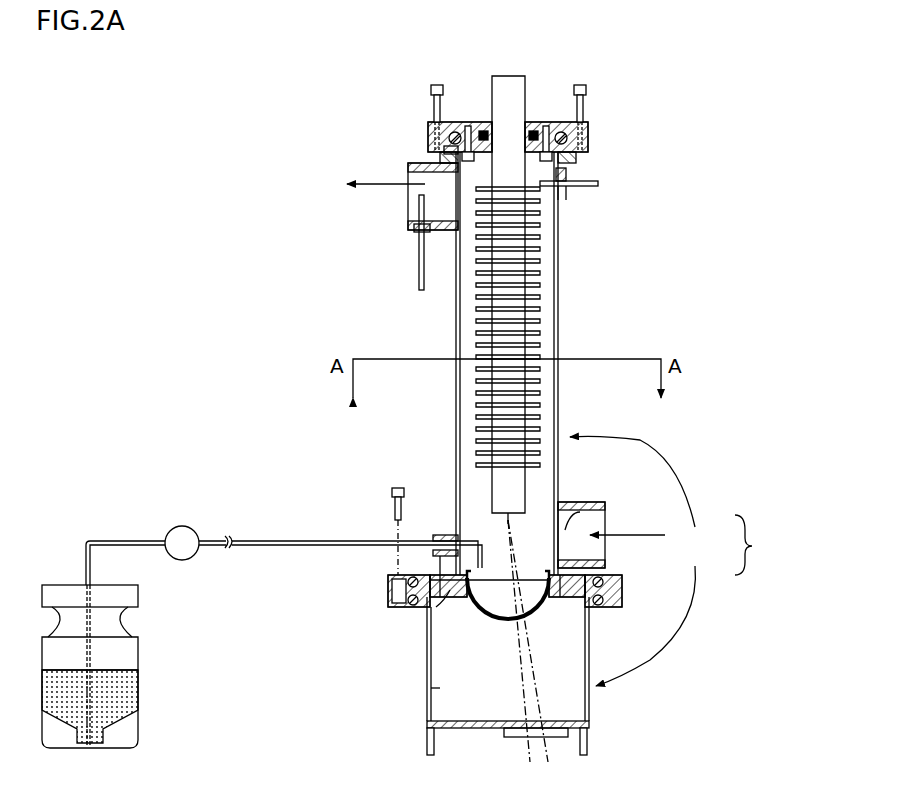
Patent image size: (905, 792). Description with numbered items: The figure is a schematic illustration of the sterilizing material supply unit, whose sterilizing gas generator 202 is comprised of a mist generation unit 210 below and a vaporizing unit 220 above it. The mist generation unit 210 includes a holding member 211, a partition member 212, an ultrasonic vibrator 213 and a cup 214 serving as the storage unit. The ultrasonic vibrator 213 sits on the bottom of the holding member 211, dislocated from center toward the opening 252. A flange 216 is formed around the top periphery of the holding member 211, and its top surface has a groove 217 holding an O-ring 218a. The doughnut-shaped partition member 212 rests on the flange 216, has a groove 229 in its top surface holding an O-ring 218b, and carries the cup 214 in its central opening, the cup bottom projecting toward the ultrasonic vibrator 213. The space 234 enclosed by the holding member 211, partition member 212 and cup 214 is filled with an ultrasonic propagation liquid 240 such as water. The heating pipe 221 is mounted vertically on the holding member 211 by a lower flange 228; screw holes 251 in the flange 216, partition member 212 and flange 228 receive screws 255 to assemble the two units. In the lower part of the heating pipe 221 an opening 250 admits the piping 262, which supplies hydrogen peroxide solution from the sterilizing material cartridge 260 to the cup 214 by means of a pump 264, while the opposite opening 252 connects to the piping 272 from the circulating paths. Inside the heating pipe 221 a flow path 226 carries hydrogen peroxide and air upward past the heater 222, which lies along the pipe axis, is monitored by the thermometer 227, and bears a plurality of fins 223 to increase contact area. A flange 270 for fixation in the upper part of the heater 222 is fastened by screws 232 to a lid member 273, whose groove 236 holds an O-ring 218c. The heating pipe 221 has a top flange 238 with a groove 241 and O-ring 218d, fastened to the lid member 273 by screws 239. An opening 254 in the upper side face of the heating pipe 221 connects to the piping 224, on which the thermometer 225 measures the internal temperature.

The sterilizing gas generator 202 is at (764, 545).
The mist generation unit 210 is at (665, 617).
The holding member 211 is at (592, 700).
The partition member 212 is at (592, 650).
The ultrasonic vibrator 213 is at (556, 740).
The cup 214 is at (470, 614).
The flange 216 is at (428, 612).
The groove 217 is at (600, 612).
The O-ring 218a is at (604, 596).
The O-ring 218b is at (405, 578).
The O-ring 218c is at (535, 130).
The O-ring 218d is at (453, 130).
The vaporizing unit 220 is at (652, 487).
The heating pipe 221 is at (560, 289).
The heater 222 is at (536, 410).
The fins 223 is at (544, 484).
The piping 224 is at (430, 166).
The thermometer 225 is at (420, 276).
The flow path 226 is at (470, 434).
The thermometer 227 is at (572, 187).
The flange 228 is at (432, 574).
The groove 229 is at (408, 600).
The screws 232 is at (468, 125).
The space 234 is at (430, 723).
The groove 236 is at (547, 125).
The flange 238 is at (590, 142).
The screws 239 is at (430, 89).
The ultrasonic propagation liquid 240 is at (440, 688).
The groove 241 is at (444, 152).
The opening 250 is at (456, 535).
The screw holes 251 is at (407, 582).
The opening 252 is at (565, 520).
The opening 254 is at (450, 236).
The screws 255 is at (392, 492).
The sterilizing material cartridge 260 is at (135, 658).
The piping 262 is at (276, 540).
The pump 264 is at (186, 526).
The flange 270 is at (572, 174).
The piping 272 is at (605, 500).
The lid member 273 is at (563, 128).